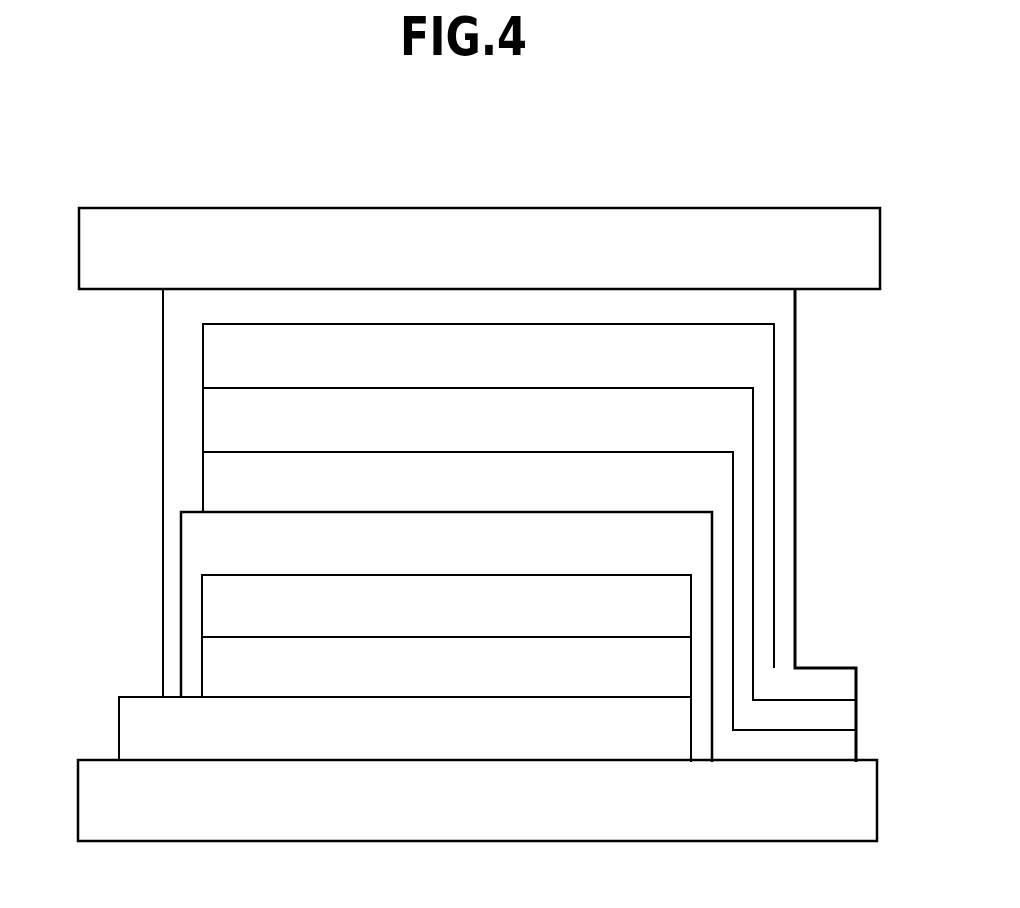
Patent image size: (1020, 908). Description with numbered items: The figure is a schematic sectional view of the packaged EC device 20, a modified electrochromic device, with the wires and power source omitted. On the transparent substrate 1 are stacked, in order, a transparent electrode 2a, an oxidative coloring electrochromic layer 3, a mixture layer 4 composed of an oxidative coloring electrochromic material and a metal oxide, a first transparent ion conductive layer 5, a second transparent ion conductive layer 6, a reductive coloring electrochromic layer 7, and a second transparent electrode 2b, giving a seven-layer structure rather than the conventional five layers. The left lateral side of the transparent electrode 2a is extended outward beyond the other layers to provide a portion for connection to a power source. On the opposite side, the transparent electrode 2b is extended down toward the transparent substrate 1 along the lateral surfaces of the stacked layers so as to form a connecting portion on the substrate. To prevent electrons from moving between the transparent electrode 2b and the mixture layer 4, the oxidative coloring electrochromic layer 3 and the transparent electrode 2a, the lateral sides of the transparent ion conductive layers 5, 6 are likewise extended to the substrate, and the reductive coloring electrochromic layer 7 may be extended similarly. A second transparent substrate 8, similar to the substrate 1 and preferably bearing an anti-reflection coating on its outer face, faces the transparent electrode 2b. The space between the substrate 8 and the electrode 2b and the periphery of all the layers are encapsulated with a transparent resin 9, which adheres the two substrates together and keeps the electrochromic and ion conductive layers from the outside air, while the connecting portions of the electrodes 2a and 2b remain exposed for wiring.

The transparent substrate 1 is at (625, 825).
The transparent electrode 2a is at (145, 733).
The transparent electrode 2b is at (227, 362).
The oxidative coloring electrochromic layer 3 is at (215, 672).
The mixture layer 4 is at (213, 607).
The first transparent ion conductive layer 5 is at (215, 547).
The second transparent ion conductive layer 6 is at (230, 482).
The reductive coloring electrochromic layer 7 is at (230, 422).
The transparent substrate 8 is at (550, 243).
The transparent resin 9 is at (772, 312).
The EC device 20 is at (688, 191).